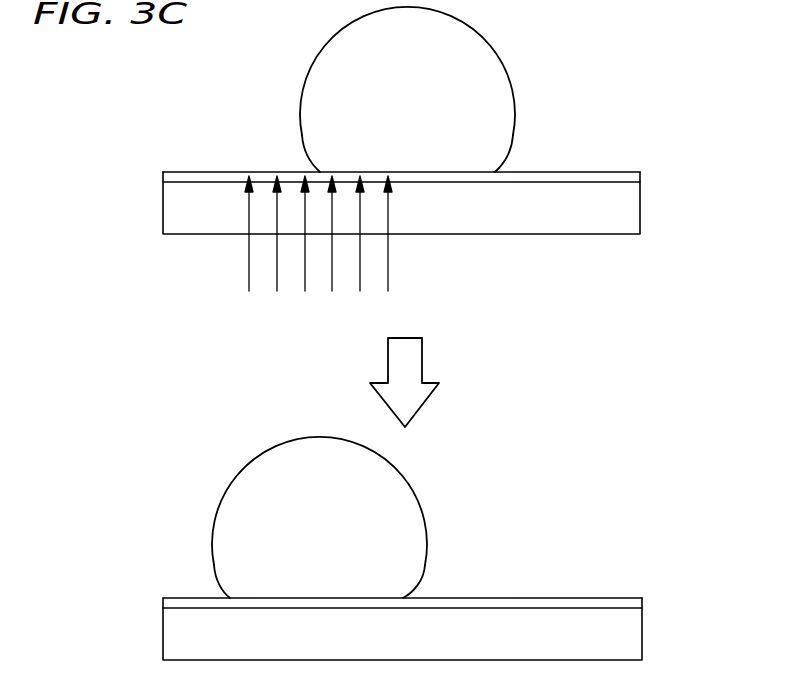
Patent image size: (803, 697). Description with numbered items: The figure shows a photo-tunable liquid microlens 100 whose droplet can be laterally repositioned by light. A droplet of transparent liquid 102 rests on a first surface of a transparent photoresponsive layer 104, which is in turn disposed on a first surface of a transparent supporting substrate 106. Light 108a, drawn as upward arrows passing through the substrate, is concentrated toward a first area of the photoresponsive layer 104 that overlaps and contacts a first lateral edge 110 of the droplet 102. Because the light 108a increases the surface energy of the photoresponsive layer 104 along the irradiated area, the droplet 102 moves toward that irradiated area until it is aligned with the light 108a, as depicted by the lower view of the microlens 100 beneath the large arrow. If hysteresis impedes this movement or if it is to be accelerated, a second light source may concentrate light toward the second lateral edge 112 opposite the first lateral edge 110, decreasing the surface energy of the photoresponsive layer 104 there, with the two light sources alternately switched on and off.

The tunable liquid microlens 100 is at (658, 94).
The droplet of transparent liquid 102 is at (467, 43).
The transparent photoresponsive layer 104 is at (628, 177).
The transparent supporting substrate 106 is at (628, 216).
The light 108a is at (410, 268).
The first lateral edge of the droplet 110 is at (317, 171).
The second lateral edge of the droplet 112 is at (507, 167).